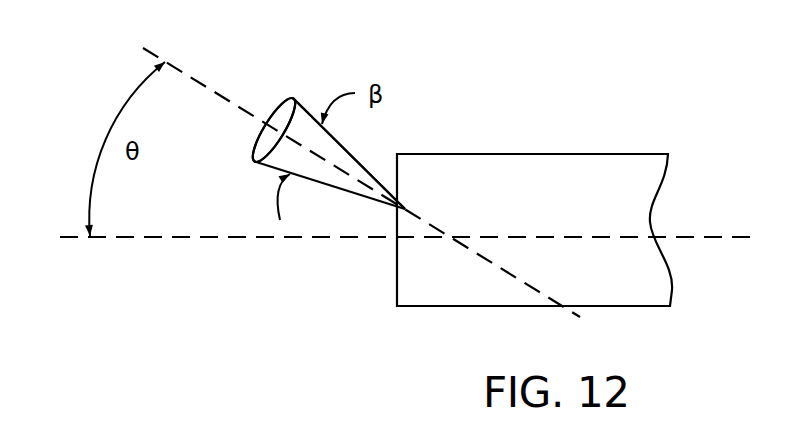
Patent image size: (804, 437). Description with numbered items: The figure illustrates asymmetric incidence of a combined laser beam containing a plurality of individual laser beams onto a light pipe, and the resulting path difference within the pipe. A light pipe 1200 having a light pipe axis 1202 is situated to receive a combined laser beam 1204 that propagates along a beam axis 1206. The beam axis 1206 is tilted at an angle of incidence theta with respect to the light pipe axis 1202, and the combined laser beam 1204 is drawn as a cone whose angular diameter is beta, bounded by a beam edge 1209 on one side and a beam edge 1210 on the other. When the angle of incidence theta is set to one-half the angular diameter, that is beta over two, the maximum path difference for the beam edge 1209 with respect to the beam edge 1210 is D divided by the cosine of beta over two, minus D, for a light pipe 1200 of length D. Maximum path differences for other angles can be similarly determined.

The light pipe 1200 is at (612, 194).
The light pipe axis 1202 is at (147, 238).
The combined laser beam 1204 is at (293, 98).
The beam axis 1206 is at (187, 82).
The beam edge 1209 is at (261, 165).
The beam edge 1210 is at (343, 148).